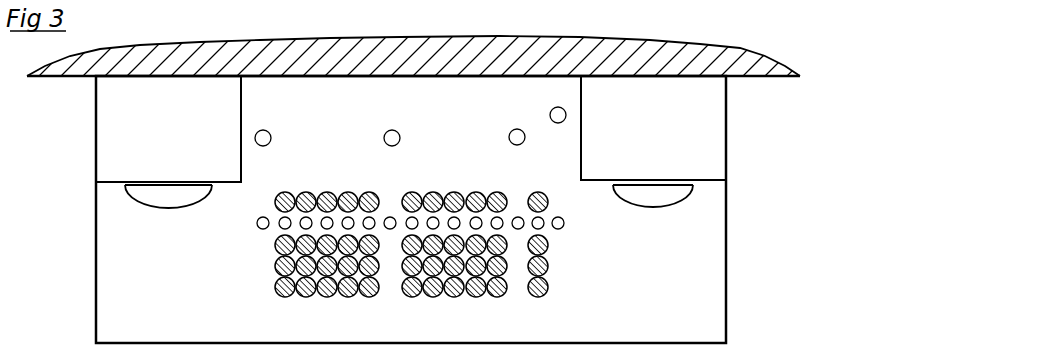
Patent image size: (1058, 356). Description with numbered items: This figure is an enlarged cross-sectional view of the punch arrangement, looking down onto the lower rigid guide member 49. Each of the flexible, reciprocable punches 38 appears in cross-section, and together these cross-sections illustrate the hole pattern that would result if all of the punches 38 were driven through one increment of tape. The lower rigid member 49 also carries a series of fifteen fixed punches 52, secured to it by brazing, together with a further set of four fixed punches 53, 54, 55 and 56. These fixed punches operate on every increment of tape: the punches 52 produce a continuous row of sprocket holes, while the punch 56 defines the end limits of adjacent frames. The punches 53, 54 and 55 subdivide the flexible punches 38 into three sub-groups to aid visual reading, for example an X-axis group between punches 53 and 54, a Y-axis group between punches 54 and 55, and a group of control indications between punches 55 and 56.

The flexible punches 38 is at (286, 297).
The lower rigid guide member 49 is at (717, 290).
The punches 52 is at (298, 218).
The punch 53 is at (268, 132).
The punch 54 is at (417, 113).
The punch 55 is at (522, 117).
The punch 56 is at (566, 113).